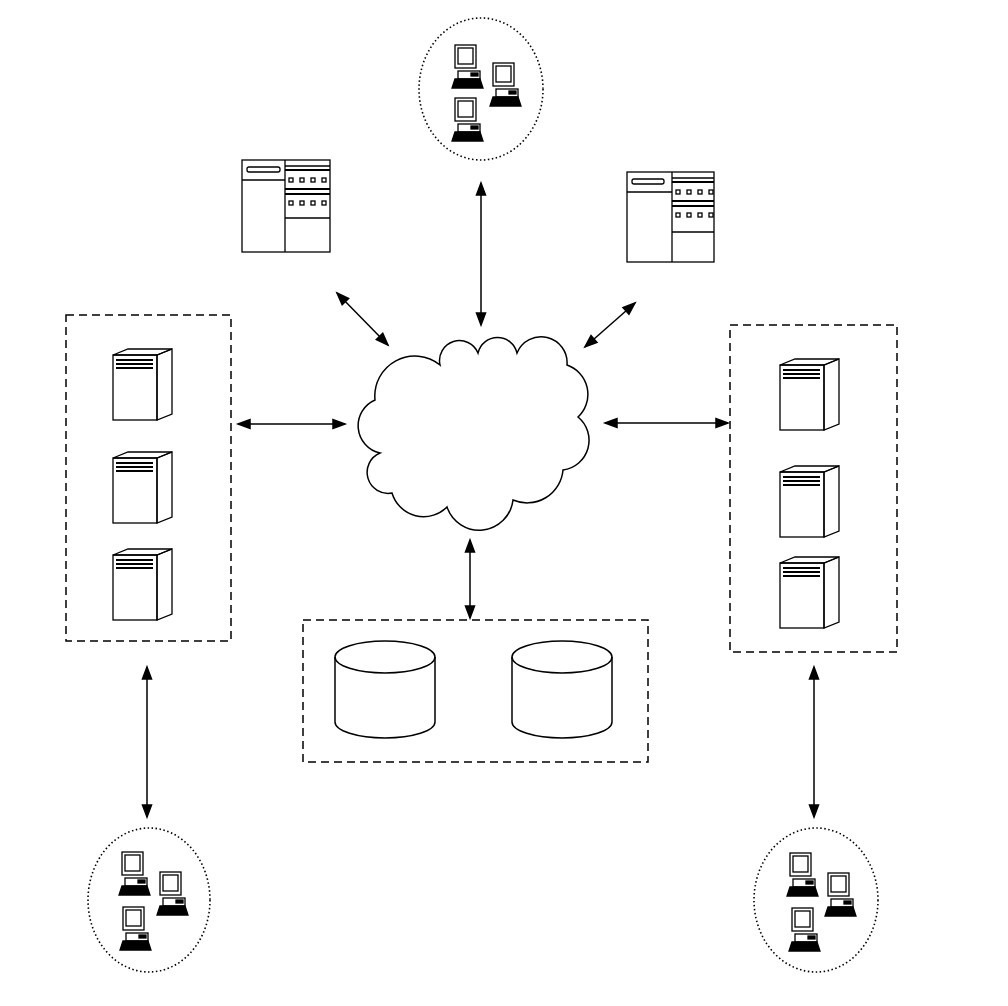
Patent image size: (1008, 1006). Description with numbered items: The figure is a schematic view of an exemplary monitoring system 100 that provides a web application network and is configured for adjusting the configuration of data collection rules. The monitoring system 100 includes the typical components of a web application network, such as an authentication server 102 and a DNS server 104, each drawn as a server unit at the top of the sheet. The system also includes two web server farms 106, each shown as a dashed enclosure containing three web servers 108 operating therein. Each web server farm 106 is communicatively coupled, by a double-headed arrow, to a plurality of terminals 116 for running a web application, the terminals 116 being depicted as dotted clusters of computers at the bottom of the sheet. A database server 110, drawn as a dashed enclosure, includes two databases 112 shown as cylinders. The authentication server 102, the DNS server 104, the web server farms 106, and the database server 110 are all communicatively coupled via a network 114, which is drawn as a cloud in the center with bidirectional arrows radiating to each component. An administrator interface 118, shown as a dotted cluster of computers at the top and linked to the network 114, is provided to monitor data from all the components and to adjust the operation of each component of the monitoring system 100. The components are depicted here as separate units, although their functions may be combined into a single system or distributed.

The monitoring system 100 is at (432, 971).
The authentication server 102 is at (681, 205).
The DNS server 104 is at (286, 185).
The web server farm 106 is at (481, 483).
The web server 108 is at (497, 488).
The database server 110 is at (475, 691).
The database 112 is at (473, 689).
The network 114 is at (473, 433).
The terminal 116 is at (483, 899).
The administrator interface 118 is at (494, 89).